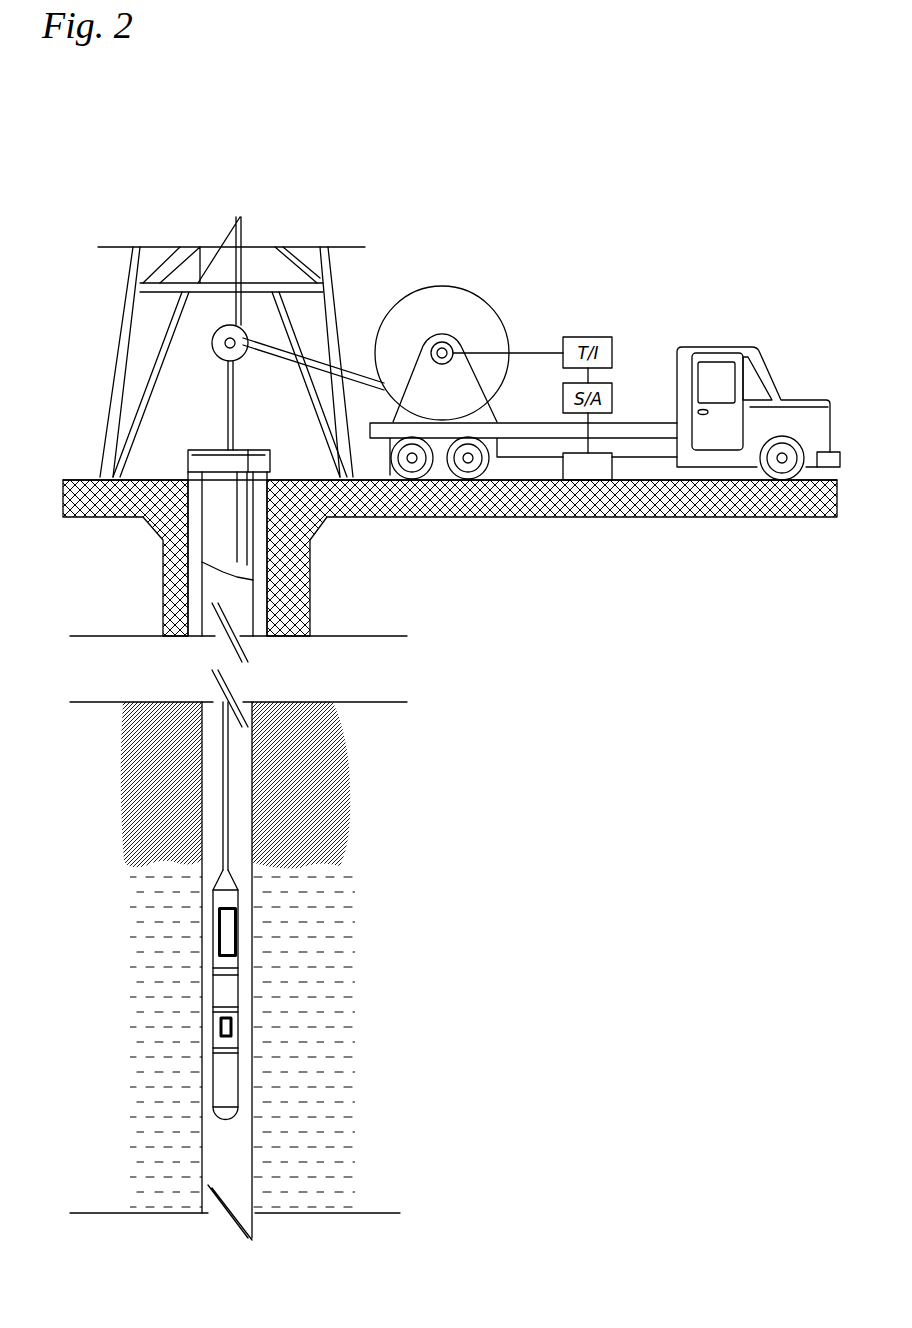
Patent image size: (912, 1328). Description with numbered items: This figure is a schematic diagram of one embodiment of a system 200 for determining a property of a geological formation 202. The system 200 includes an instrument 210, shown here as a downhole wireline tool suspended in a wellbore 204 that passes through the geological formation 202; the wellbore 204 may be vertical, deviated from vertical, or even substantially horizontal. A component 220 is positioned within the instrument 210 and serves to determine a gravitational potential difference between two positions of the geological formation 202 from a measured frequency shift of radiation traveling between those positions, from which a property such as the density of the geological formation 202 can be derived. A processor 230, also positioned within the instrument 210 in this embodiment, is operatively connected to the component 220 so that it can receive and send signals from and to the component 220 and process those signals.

The system 200 is at (207, 985).
The geological formation 202 is at (323, 873).
The wellbore 204 is at (235, 1143).
The instrument 210 is at (247, 897).
The component 220 is at (237, 932).
The processor 230 is at (232, 1027).